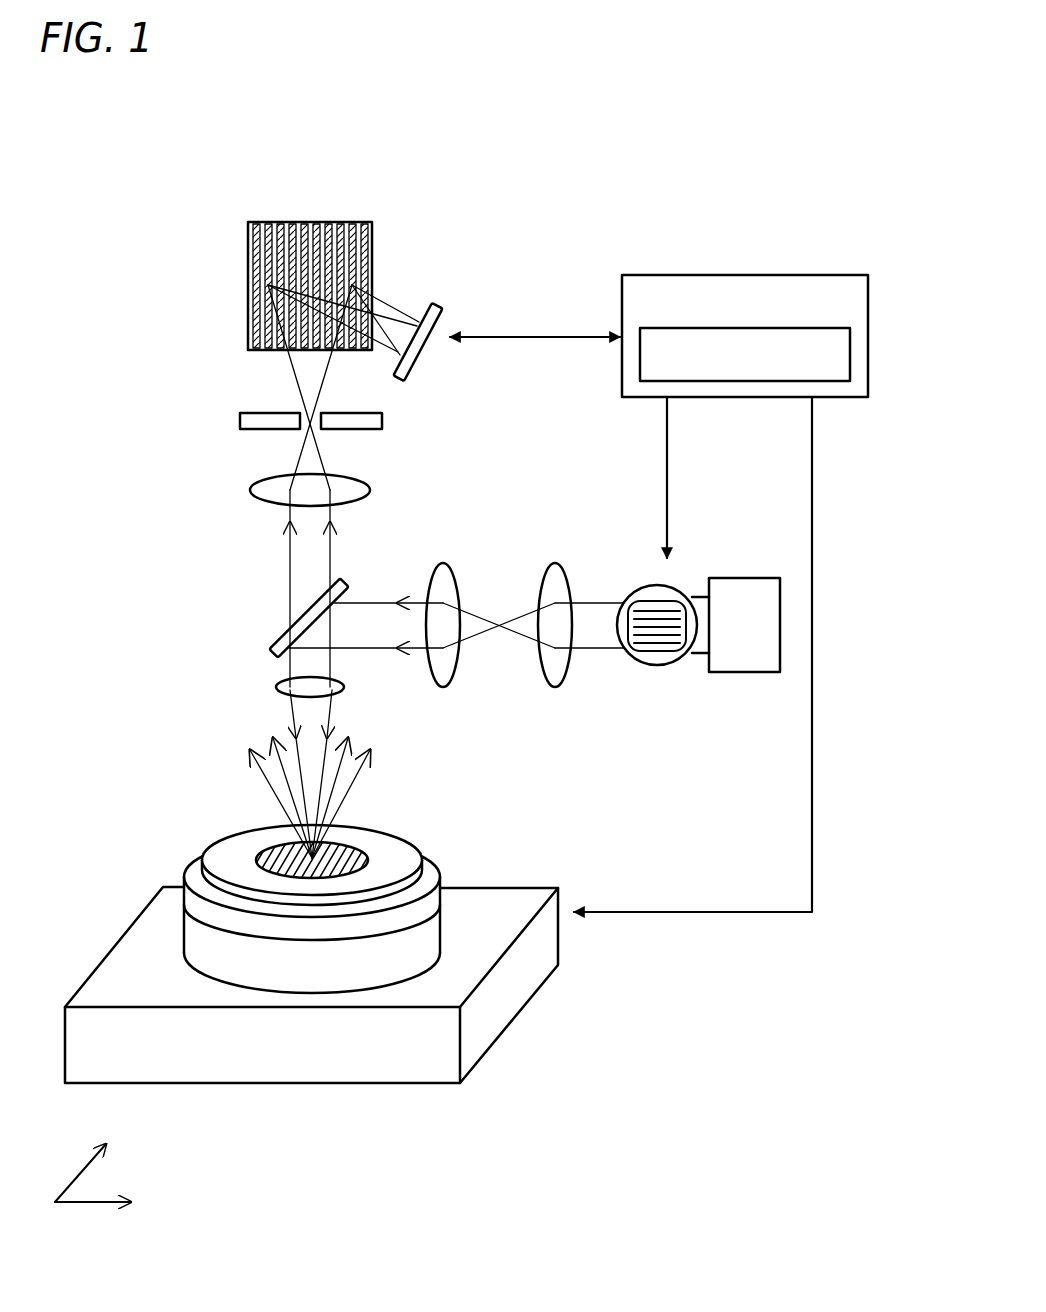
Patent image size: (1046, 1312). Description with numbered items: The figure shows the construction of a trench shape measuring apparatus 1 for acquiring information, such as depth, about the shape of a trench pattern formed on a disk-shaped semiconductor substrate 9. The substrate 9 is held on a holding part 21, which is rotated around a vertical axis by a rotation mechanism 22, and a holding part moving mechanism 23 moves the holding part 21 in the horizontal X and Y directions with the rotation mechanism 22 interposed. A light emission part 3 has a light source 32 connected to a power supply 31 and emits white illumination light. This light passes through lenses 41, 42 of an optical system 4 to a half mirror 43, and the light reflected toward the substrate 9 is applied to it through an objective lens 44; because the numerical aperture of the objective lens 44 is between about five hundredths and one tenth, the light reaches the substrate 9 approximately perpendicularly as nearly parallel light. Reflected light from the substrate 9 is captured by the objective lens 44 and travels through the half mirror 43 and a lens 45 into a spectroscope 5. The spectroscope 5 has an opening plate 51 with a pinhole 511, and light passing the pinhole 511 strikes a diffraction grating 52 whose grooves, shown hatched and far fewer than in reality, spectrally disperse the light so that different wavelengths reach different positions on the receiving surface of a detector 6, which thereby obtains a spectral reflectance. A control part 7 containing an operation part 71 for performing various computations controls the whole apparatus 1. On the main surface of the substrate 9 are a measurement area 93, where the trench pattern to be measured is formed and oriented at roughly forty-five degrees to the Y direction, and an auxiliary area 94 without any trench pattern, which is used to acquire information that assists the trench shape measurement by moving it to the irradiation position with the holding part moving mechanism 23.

The trench shape measuring apparatus 1 is at (163, 146).
The light emission part 3 is at (699, 758).
The power supply 31 is at (745, 656).
The light source 32 is at (657, 667).
The optical system 4 is at (184, 630).
The lens 41 is at (555, 563).
The lens 42 is at (443, 563).
The half mirror 43 is at (302, 617).
The objective lens 44 is at (280, 690).
The lens 45 is at (258, 493).
The spectroscope 5 is at (198, 237).
The opening plate 51 is at (250, 420).
The pinhole 511 is at (292, 404).
The diffraction grating 52 is at (316, 232).
The detector 6 is at (440, 318).
The control part 7 is at (665, 275).
The operation part 71 is at (851, 353).
The substrate 9 is at (236, 840).
The measurement area 93 is at (348, 852).
The auxiliary area 94 is at (393, 862).
The holding part 21 is at (194, 875).
The rotation mechanism 22 is at (198, 943).
The holding part moving mechanism 23 is at (118, 987).